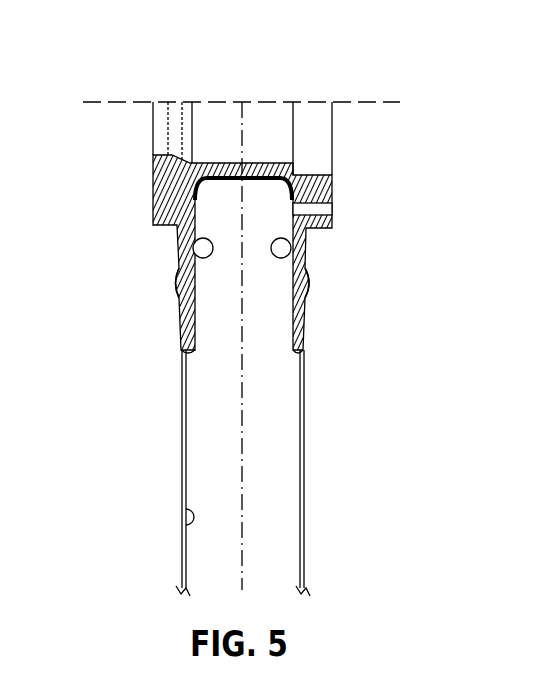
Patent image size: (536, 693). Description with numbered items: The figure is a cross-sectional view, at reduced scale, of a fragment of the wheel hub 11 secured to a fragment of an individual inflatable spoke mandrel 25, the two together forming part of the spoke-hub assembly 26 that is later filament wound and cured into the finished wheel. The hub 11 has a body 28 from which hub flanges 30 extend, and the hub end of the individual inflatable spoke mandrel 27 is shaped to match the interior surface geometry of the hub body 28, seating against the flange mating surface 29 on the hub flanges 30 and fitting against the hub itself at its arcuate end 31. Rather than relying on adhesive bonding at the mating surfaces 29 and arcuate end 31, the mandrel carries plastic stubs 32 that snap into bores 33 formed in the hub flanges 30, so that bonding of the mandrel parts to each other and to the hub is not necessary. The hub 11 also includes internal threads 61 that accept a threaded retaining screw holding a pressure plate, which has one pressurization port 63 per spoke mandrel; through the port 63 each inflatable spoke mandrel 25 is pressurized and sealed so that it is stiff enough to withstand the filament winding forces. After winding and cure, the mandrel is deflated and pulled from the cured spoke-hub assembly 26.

The wheel hub 11 is at (332, 155).
The inflatable spoke mandrel 25 is at (185, 528).
The spoke-hub assembly 26 is at (188, 120).
The individual inflatable spoke mandrel 27 is at (305, 527).
The hub body 28 is at (160, 200).
The mating surface 29 is at (183, 265).
The hub flange 30 is at (181, 347).
The arcuate end 31 is at (243, 150).
The plastic stub 32 is at (175, 296).
The bore 33 is at (288, 285).
The internal threads 61 is at (307, 168).
The pressurization port 63 is at (318, 200).